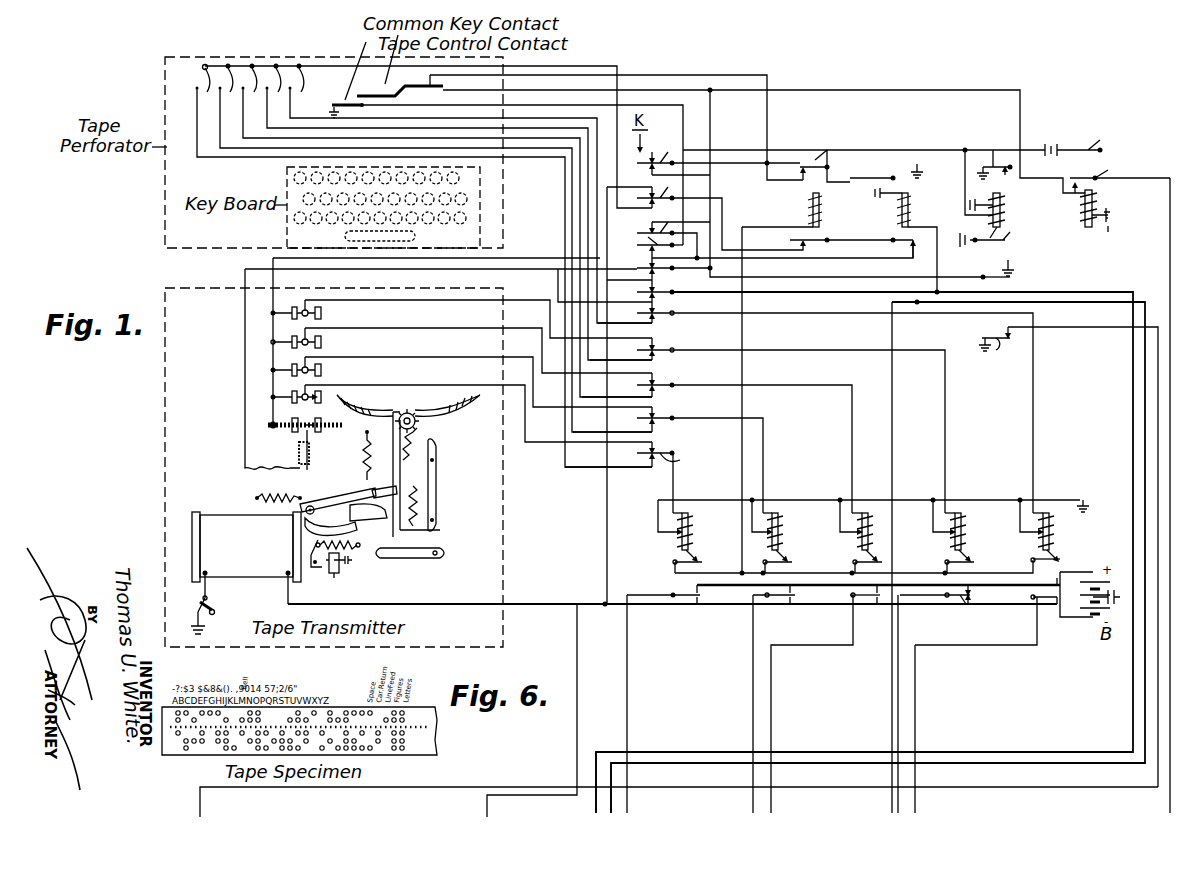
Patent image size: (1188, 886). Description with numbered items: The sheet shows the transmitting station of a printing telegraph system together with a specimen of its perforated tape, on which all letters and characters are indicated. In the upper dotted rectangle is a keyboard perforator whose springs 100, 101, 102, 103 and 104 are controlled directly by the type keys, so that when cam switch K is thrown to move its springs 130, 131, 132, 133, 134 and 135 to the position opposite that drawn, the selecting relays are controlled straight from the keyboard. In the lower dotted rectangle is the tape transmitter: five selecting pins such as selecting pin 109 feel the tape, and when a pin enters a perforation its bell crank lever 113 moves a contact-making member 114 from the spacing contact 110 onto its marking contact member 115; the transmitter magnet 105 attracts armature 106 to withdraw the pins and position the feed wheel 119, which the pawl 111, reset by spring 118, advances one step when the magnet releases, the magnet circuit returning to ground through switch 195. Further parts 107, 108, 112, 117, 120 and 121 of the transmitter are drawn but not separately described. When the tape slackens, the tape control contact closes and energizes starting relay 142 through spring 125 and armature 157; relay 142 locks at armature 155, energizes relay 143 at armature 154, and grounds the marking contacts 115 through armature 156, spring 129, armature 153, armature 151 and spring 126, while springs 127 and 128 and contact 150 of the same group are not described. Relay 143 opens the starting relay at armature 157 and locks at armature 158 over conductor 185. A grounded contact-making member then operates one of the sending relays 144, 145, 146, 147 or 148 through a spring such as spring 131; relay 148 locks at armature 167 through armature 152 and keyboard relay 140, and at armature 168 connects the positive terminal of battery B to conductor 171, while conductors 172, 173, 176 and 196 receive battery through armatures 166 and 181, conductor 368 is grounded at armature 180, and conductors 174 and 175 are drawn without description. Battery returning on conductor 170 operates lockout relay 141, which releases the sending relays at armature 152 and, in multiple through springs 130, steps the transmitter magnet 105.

The contact spring 100 is at (205, 66).
The contact spring 101 is at (228, 66).
The contact spring 102 is at (254, 66).
The contact spring 103 is at (278, 66).
The contact spring 104 is at (301, 76).
The transmitter magnet 105 is at (224, 515).
The armature 106 is at (318, 576).
The magnet 107 is at (340, 575).
The spring 108 is at (342, 558).
The selecting pin 109 is at (375, 447).
The spacing contact 110 is at (322, 390).
The pawl 111 is at (437, 514).
The armature 112 is at (380, 494).
The bell crank lever 113 is at (326, 478).
The contact-making member 114 is at (312, 440).
The marking contact member 115 is at (292, 342).
The feed arms 117 is at (440, 412).
The spring 118 is at (440, 474).
The feed wheel 119 is at (412, 407).
The spring 120 is at (362, 525).
The lever 121 is at (342, 513).
The spring of cam switch K 125 is at (660, 162).
The spring of cam switch K 126 is at (665, 195).
The contact 127 is at (667, 236).
The contact 128 is at (648, 243).
The spring of cam switch K 129 is at (660, 270).
The spring of cam switch K 130 is at (662, 294).
The spring of cam switch K 131 is at (662, 315).
The spring of cam switch K 132 is at (662, 352).
The spring of cam switch K 133 is at (664, 387).
The spring of cam switch K 134 is at (664, 422).
The spring of cam switch K 135 is at (673, 461).
The keyboard relay 140 is at (806, 212).
The lockout relay 141 is at (896, 212).
The starting relay 142 is at (1003, 212).
The relay 143 is at (1095, 210).
The sending relay 144 is at (690, 527).
The sending relay 145 is at (780, 527).
The sending relay 146 is at (866, 513).
The sending relay 147 is at (962, 527).
The selecting relay 148 is at (1055, 533).
The contact 150 is at (815, 160).
The armature 151 is at (803, 244).
The armature 152 is at (900, 182).
The armature 153 is at (912, 240).
The armature 154 is at (993, 150).
The armature 155 is at (1008, 240).
The armature 156 is at (994, 277).
The armature 157 is at (1095, 150).
The armature 158 is at (1105, 172).
The armature 166 is at (960, 608).
The armature 167 is at (1033, 564).
The armature 168 is at (1033, 600).
The conductor 170 is at (594, 808).
The conductor 171 is at (900, 803).
The conductor 172 is at (913, 803).
The conductor 173 is at (773, 801).
The conductor 174 is at (752, 803).
The conductor 175 is at (612, 808).
The conductor 176 is at (628, 794).
The armature 180 is at (1068, 557).
The armature 181 is at (917, 302).
The conductor 185 is at (1168, 804).
The switch 195 is at (211, 603).
The conductor 196 is at (484, 806).
The conductor 368 is at (200, 808).